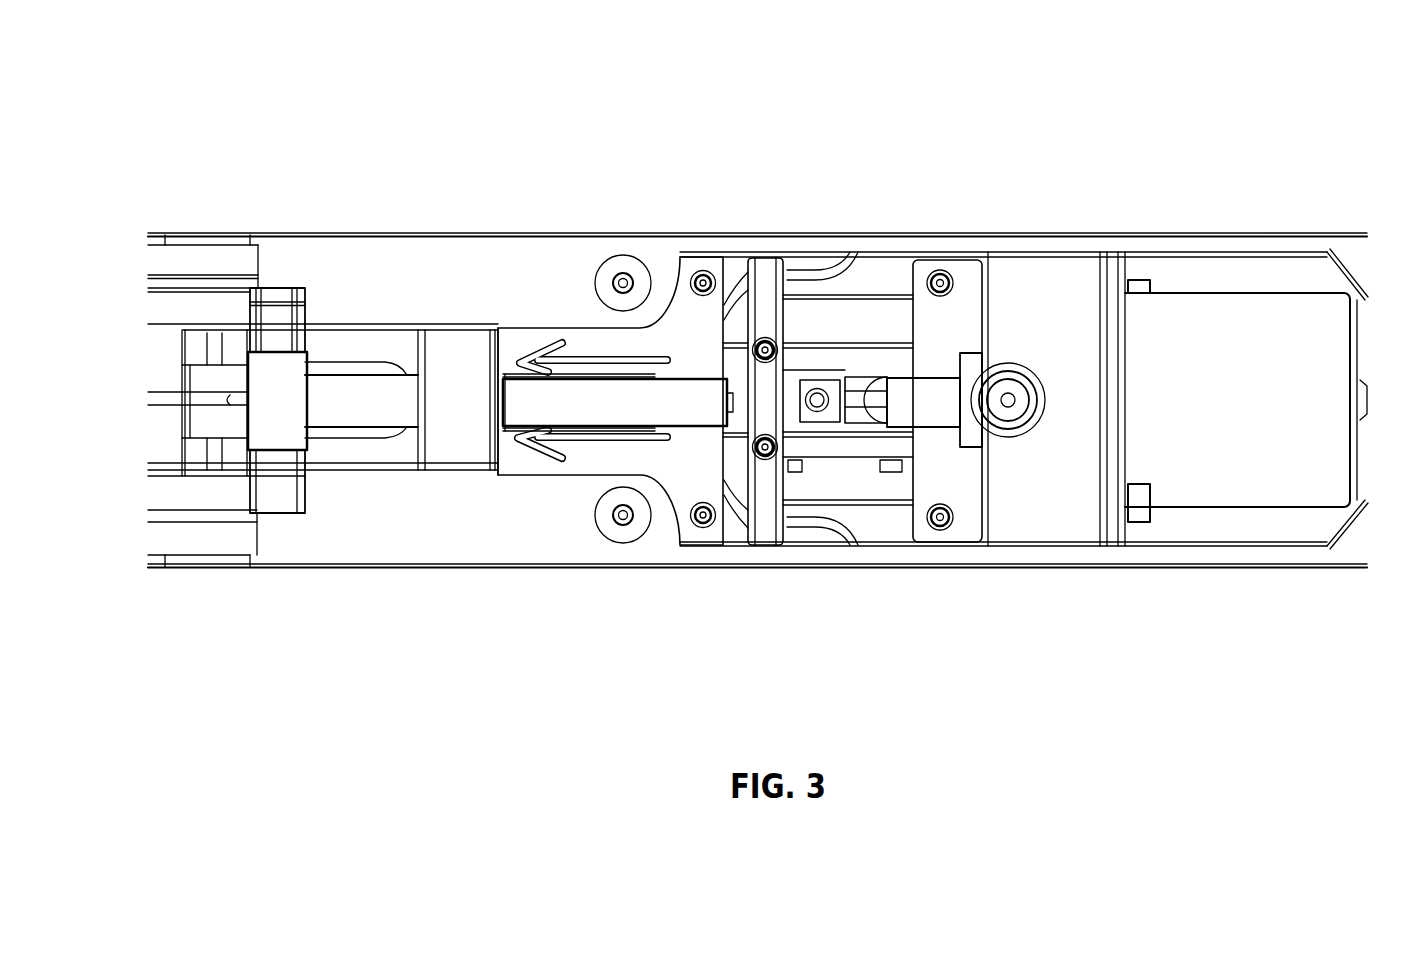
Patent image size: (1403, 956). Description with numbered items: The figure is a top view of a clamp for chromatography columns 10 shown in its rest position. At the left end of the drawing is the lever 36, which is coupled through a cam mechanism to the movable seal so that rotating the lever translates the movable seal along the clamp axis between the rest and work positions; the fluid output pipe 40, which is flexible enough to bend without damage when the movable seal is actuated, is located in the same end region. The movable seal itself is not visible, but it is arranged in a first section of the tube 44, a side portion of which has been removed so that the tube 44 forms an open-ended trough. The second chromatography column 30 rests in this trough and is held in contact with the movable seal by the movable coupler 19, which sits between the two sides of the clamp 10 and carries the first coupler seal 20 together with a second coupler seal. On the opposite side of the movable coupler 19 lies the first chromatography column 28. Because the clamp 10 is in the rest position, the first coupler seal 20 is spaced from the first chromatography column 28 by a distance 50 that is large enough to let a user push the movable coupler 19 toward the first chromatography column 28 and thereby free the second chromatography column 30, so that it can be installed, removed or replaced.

The clamp for chromatography columns 10 is at (622, 150).
The movable coupler 19 is at (763, 517).
The first coupler seal 20 is at (833, 378).
The first chromatography column 28 is at (910, 405).
The second chromatography column 30 is at (582, 407).
The lever 36 is at (197, 236).
The fluid output pipe 40 is at (207, 402).
The tube 44 is at (527, 353).
The distance 50 is at (807, 578).